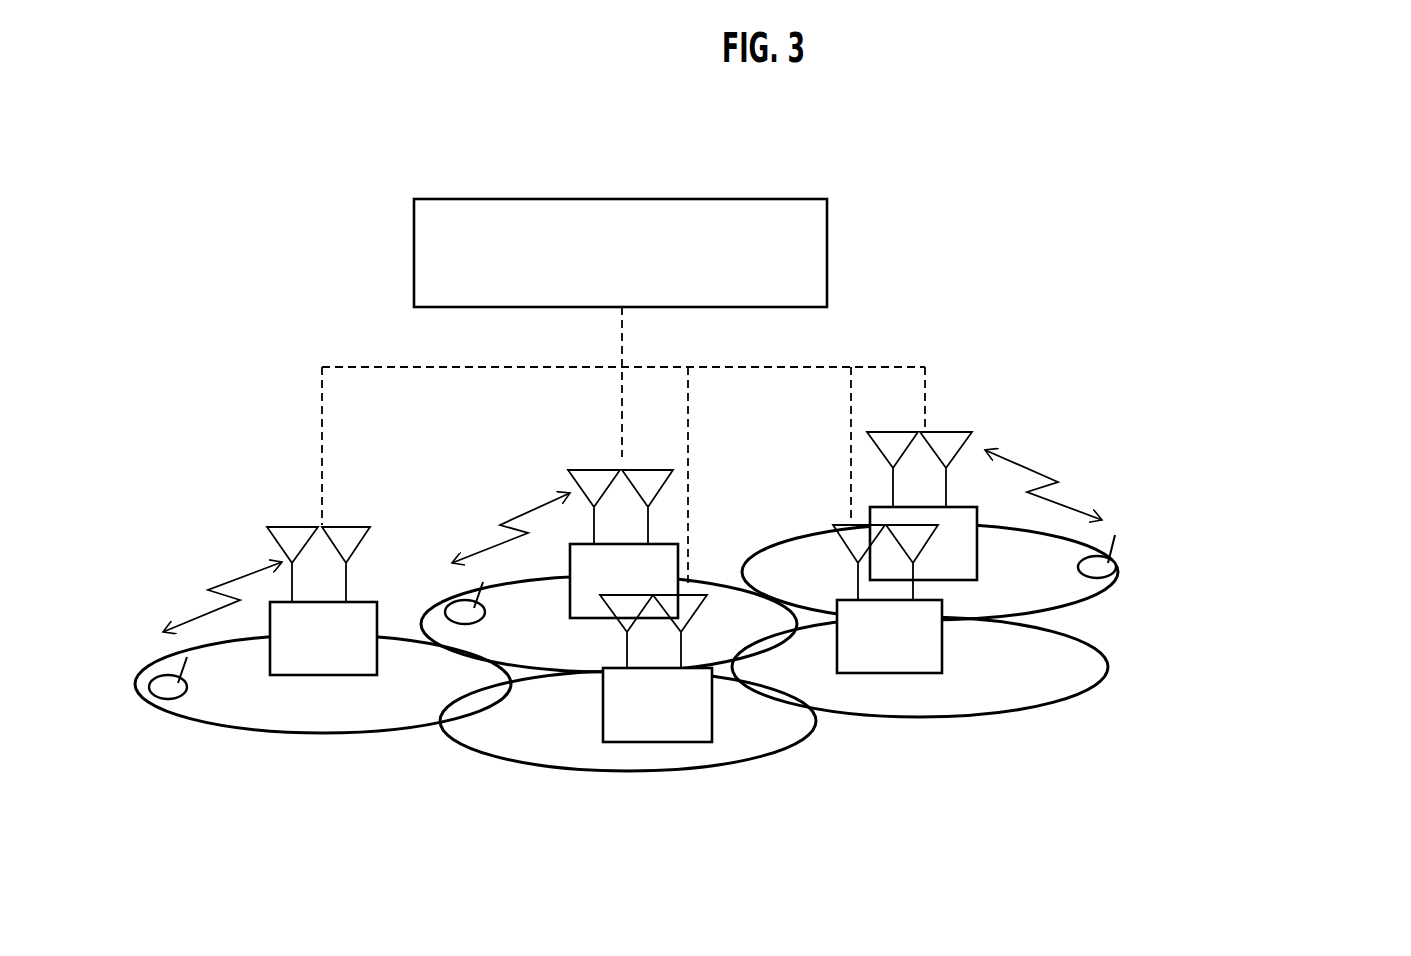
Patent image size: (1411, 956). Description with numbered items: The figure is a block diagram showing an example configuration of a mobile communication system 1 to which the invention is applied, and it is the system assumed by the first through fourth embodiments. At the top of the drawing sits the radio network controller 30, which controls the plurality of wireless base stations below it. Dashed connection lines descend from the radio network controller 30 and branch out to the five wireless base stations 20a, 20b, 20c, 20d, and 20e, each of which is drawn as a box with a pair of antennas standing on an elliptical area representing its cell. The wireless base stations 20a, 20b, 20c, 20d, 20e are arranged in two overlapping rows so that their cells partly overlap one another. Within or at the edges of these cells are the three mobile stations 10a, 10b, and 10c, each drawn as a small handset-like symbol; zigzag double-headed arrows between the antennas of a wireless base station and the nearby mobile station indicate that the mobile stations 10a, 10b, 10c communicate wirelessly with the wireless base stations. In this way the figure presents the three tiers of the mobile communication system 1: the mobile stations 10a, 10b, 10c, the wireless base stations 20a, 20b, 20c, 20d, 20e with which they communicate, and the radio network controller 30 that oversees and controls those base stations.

The mobile communication system 1 is at (924, 183).
The radio network controller 30 is at (827, 243).
The mobile station 10a is at (452, 600).
The mobile station 10b is at (165, 698).
The mobile station 10c is at (1116, 570).
The wireless base station 20a is at (657, 544).
The wireless base station 20b is at (320, 675).
The wireless base station 20c is at (655, 742).
The wireless base station 20d is at (903, 673).
The wireless base station 20e is at (983, 557).